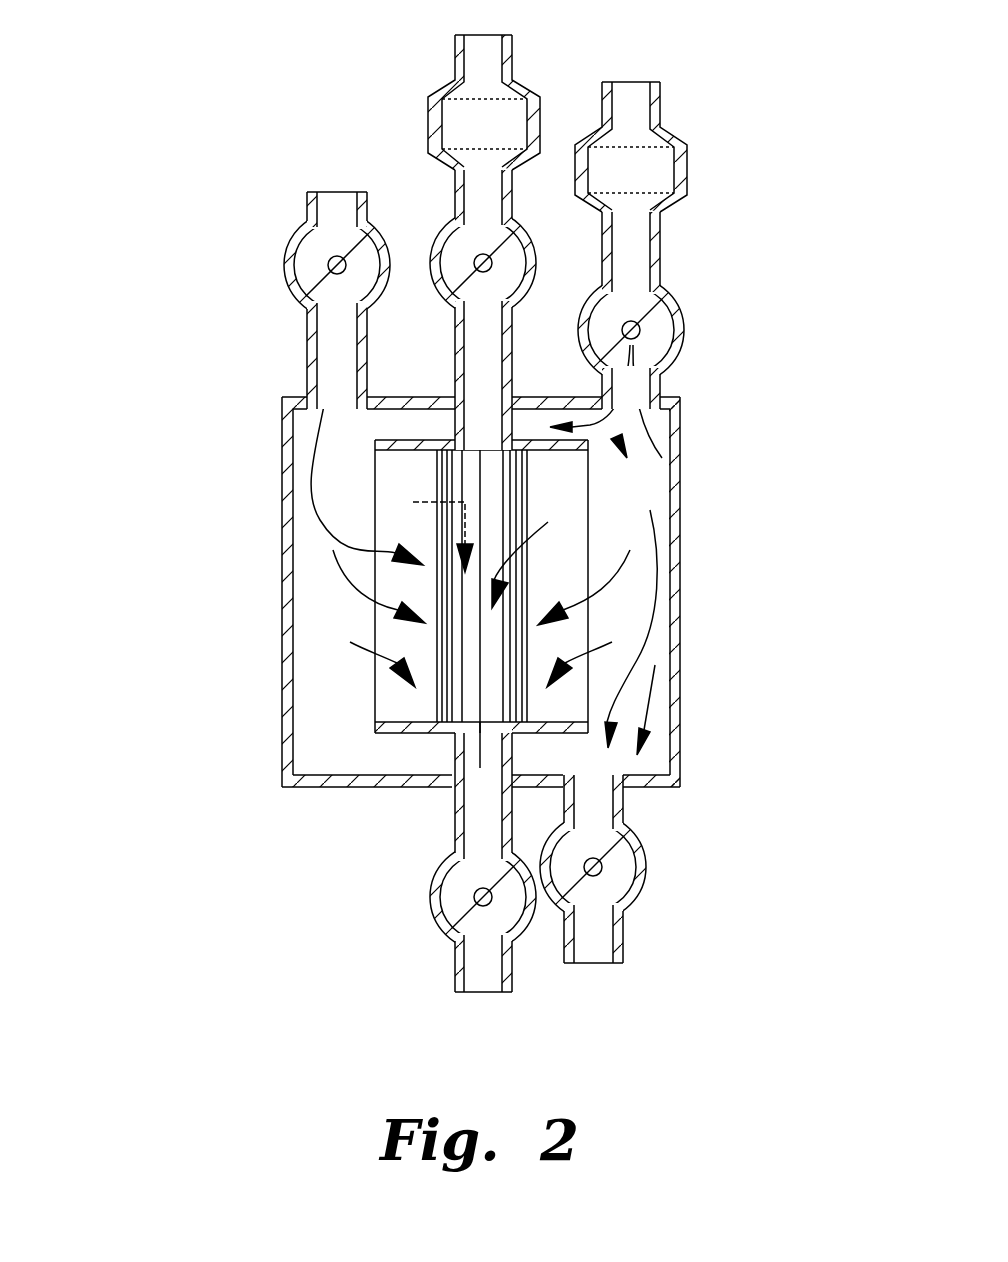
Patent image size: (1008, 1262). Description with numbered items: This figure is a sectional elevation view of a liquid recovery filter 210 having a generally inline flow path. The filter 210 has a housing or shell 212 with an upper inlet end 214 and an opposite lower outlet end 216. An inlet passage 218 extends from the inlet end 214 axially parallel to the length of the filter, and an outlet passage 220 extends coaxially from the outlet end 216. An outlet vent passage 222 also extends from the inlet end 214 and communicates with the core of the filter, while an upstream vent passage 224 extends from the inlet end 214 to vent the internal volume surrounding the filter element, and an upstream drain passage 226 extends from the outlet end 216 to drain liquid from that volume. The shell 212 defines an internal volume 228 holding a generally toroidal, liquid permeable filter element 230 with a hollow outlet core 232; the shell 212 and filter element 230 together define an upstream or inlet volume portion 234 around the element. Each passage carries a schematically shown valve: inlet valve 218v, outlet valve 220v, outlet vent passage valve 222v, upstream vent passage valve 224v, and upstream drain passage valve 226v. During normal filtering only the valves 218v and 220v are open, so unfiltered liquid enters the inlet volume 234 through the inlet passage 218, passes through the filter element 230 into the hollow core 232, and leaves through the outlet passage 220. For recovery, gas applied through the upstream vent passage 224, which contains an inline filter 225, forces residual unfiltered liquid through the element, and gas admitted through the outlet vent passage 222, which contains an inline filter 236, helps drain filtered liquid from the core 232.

The liquid recovery filter 210 is at (222, 881).
The housing or shell 212 is at (283, 633).
The inlet end 214 is at (290, 397).
The outlet end 216 is at (360, 787).
The inlet passage 218 is at (307, 350).
The inlet valve 218v is at (284, 258).
The outlet passage 220 is at (455, 828).
The outlet valve 220v is at (440, 925).
The outlet vent passage 222 is at (513, 325).
The outlet vent passage valve 222v is at (443, 227).
The upstream vent passage 224 is at (660, 385).
The upstream vent passage valve 224v is at (673, 288).
The inline filter 225 is at (672, 130).
The upstream drain passage 226 is at (623, 803).
The upstream drain passage valve 226v is at (647, 888).
The internal volume 228 is at (313, 542).
The filter element 230 is at (373, 703).
The hollow outlet core 232 is at (503, 513).
The upstream or inlet volume portion 234 is at (323, 760).
The inline filter 236 is at (442, 88).